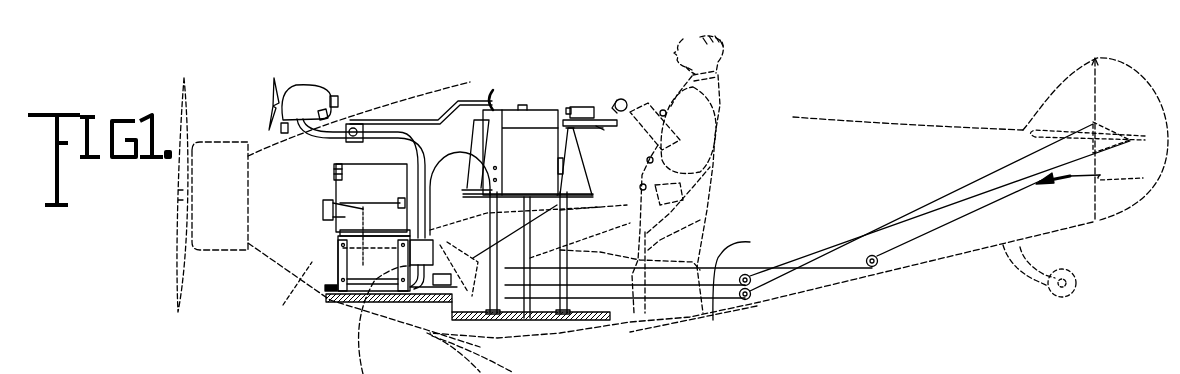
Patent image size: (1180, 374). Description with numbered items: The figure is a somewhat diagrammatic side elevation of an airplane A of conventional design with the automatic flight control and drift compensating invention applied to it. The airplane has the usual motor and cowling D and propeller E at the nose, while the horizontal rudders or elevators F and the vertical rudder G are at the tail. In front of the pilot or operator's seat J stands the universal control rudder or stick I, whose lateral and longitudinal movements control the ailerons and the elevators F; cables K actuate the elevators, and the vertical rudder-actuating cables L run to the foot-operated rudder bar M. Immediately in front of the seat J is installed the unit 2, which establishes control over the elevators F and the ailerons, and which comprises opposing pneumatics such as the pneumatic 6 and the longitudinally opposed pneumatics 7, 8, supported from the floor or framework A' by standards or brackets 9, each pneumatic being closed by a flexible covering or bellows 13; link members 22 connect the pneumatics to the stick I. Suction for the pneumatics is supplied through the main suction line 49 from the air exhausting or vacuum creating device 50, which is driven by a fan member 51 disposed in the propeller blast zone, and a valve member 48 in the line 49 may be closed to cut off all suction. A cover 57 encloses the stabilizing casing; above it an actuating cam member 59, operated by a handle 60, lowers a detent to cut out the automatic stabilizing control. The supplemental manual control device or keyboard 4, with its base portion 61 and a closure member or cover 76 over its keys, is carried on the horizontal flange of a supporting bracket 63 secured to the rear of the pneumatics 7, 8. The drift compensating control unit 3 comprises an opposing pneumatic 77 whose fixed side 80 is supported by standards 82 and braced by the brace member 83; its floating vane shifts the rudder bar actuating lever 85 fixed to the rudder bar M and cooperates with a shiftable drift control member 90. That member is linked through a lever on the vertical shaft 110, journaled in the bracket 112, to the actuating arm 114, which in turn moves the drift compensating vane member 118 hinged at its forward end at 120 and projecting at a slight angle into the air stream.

The control unit 2 is at (530, 137).
The control unit 3 is at (357, 258).
The manual control device or keyboard 4 is at (602, 112).
The pneumatic 6 is at (523, 150).
The pneumatic 7 is at (475, 173).
The pneumatic 8 is at (587, 169).
The standards or brackets 9 is at (530, 255).
The flexible covering or bellows 13 is at (472, 192).
The link members 22 is at (520, 200).
The valve member 48 is at (364, 128).
The main suction line 49 is at (442, 163).
The air exhausting or vacuum creating device 50 is at (298, 92).
The fan member 51 is at (270, 88).
The cover 57 is at (505, 90).
The actuating cam member 59 is at (532, 106).
The handle 60 is at (521, 105).
The base portion 61 is at (600, 128).
The supporting bracket 63 is at (578, 100).
The closure member or cover 76 is at (582, 105).
The pneumatic 77 is at (360, 267).
The fixed side 80 is at (352, 330).
The standards 82 is at (333, 264).
The brace member 83 is at (375, 224).
The rudder bar actuating lever 85 is at (382, 262).
The drift control member 90 is at (383, 277).
The vertical shaft 110 is at (342, 216).
The bracket 112 is at (340, 203).
The actuating arm 114 is at (390, 200).
The drift compensating vane member 118 is at (388, 170).
The hinge 120 is at (334, 167).
The airplane A is at (670, 228).
The floor or framework A' is at (468, 311).
The motor and cowling D is at (222, 150).
The propeller E is at (183, 250).
The horizontal rudders or elevators F is at (1088, 153).
The vertical rudder G is at (1143, 90).
The universal control rudder or stick I is at (527, 235).
The pilot or operator's seat J is at (686, 241).
The elevator actuating cables K is at (1027, 150).
The vertical rudder-actuating cables L is at (597, 265).
The rudder bar M is at (460, 254).